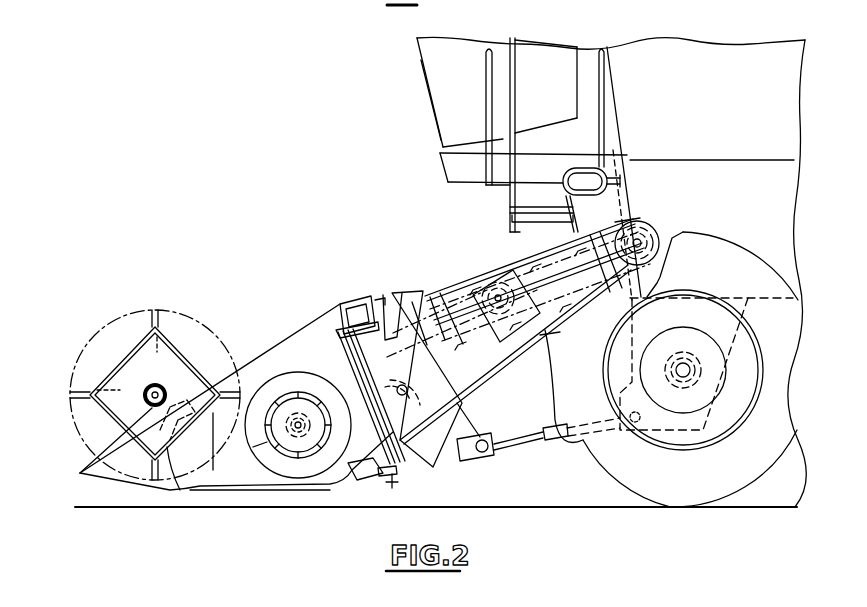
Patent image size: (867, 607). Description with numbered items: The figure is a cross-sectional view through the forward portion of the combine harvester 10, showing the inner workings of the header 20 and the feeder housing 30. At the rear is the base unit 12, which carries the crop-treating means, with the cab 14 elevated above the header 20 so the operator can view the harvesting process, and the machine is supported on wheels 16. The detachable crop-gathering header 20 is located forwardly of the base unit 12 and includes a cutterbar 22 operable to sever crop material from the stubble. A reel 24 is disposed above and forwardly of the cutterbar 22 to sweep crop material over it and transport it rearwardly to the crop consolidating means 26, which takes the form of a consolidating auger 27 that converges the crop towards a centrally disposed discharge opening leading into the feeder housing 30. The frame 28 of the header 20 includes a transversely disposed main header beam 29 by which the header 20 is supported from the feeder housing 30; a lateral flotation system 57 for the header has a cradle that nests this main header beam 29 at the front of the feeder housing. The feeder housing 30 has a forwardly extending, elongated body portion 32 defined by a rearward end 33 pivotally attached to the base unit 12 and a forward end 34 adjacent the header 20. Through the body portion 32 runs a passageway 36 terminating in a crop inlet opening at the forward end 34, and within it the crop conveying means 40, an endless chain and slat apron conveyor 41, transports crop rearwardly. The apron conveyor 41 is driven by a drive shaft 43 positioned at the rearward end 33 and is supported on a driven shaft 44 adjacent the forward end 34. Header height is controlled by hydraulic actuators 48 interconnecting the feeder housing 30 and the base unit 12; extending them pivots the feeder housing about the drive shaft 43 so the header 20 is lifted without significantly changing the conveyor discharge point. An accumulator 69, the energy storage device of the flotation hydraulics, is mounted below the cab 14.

The combine harvester 10 is at (362, 168).
The base unit 12 is at (722, 55).
The cab 14 is at (440, 88).
The wheels 16 is at (753, 248).
The crop-gathering header 20 is at (305, 292).
The cutterbar 22 is at (187, 483).
The reel 24 is at (127, 357).
The crop consolidating means 26 is at (288, 352).
The consolidating auger 27 is at (307, 388).
The frame 28 is at (392, 482).
The main header beam 29 is at (360, 302).
The feeder housing 30 is at (500, 255).
The elongated body portion 32 is at (545, 256).
The rearward end 33 is at (634, 215).
The forward end 34 is at (352, 462).
The passageway 36 is at (572, 340).
The crop conveying means 40 is at (470, 393).
The apron conveyor 41 is at (463, 292).
The drive shaft 43 is at (643, 237).
The driven shaft 44 is at (448, 405).
The hydraulic actuators 48 is at (527, 442).
The lateral flotation system 57 is at (348, 288).
The accumulator 69 is at (593, 183).